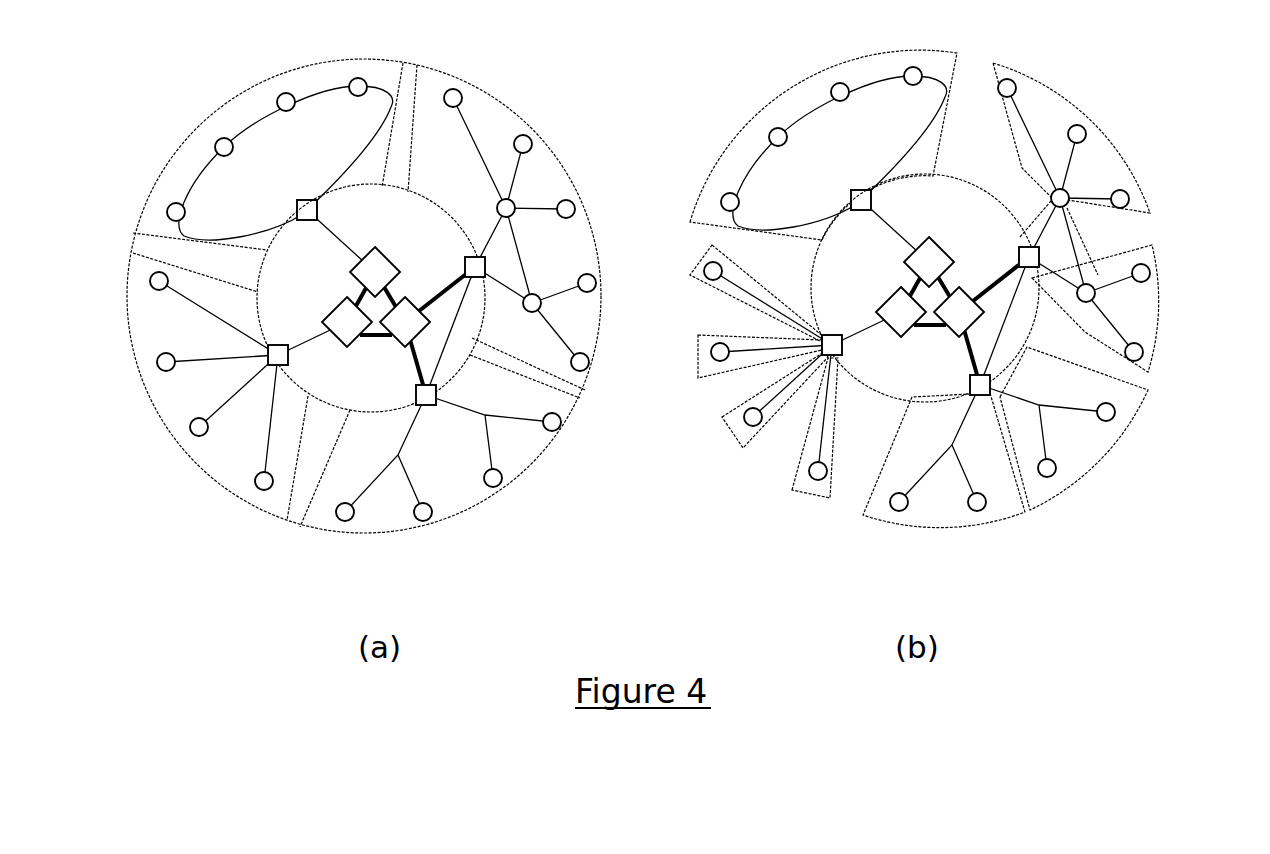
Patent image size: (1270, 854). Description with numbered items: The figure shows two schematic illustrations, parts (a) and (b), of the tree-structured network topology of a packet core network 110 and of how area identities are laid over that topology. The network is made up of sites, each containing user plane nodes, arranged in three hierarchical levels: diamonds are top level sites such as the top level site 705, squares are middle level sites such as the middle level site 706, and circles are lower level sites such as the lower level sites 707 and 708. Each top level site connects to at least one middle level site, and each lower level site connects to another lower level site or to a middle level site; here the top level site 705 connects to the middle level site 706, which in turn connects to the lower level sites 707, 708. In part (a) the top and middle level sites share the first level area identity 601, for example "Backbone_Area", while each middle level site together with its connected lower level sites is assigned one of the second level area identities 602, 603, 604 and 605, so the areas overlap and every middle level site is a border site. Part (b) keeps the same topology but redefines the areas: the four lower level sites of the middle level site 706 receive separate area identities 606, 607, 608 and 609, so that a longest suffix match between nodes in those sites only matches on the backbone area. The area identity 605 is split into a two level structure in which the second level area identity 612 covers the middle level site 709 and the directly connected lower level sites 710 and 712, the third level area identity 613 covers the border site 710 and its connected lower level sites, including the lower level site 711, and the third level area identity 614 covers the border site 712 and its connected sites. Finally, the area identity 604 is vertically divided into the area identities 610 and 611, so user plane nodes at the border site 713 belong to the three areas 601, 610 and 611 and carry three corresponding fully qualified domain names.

The packet core network 110 is at (192, 80).
The area identity 601 is at (408, 240).
The area identity 602 is at (308, 176).
The area identity 603 is at (216, 410).
The area identity 604 is at (470, 475).
The area identity 605 is at (580, 263).
The area identity 606 is at (690, 273).
The area identity 607 is at (698, 352).
The area identity 608 is at (722, 418).
The area identity 609 is at (792, 490).
The area identity 610 is at (1007, 522).
The area identity 611 is at (1102, 460).
The area identity 612 is at (1038, 215).
The area identity 613 is at (1157, 263).
The area identity 614 is at (1062, 110).
The top level site 705 is at (322, 323).
The middle level site 706 is at (288, 355).
The lower level site 707 is at (263, 490).
The lower level site 708 is at (193, 436).
The middle level site 709 is at (1019, 258).
The lower level site 710 is at (1096, 292).
The lower level site 711 is at (1144, 350).
The lower level site 712 is at (1067, 183).
The border site 713 is at (992, 378).